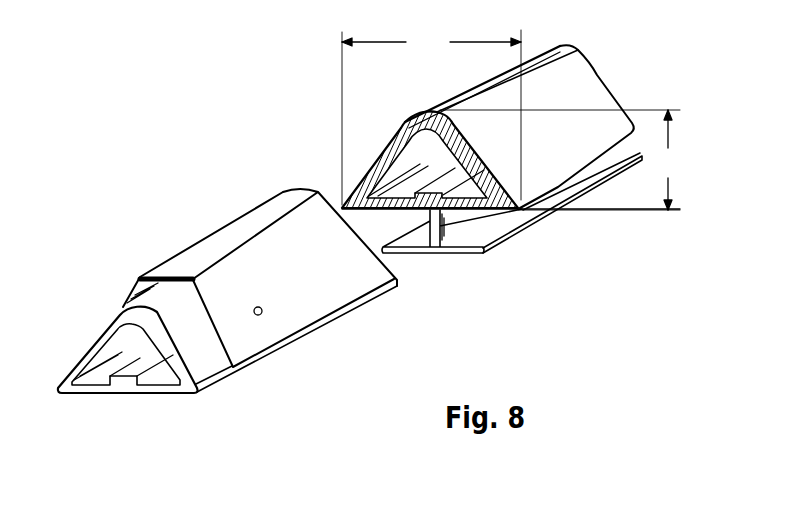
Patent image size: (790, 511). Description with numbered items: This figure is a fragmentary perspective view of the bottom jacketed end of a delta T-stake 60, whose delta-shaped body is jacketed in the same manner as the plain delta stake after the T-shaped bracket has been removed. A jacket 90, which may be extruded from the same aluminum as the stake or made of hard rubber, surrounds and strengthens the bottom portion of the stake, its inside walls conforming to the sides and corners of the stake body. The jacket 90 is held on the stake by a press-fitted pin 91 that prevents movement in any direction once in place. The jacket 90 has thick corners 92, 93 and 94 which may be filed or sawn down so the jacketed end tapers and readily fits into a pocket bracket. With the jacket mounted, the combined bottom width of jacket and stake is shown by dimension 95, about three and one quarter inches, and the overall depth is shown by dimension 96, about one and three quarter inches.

The delta T-stake 60 is at (96, 331).
The jacket 90 is at (227, 233).
The press-fitted pin 91 is at (263, 309).
The thick corner of jacket 92 is at (343, 210).
The thick corner of jacket 93 is at (498, 226).
The thick corner of jacket 94 is at (435, 118).
The combined bottom width dimension 95 is at (431, 117).
The overall depth dimension 96 is at (562, 160).